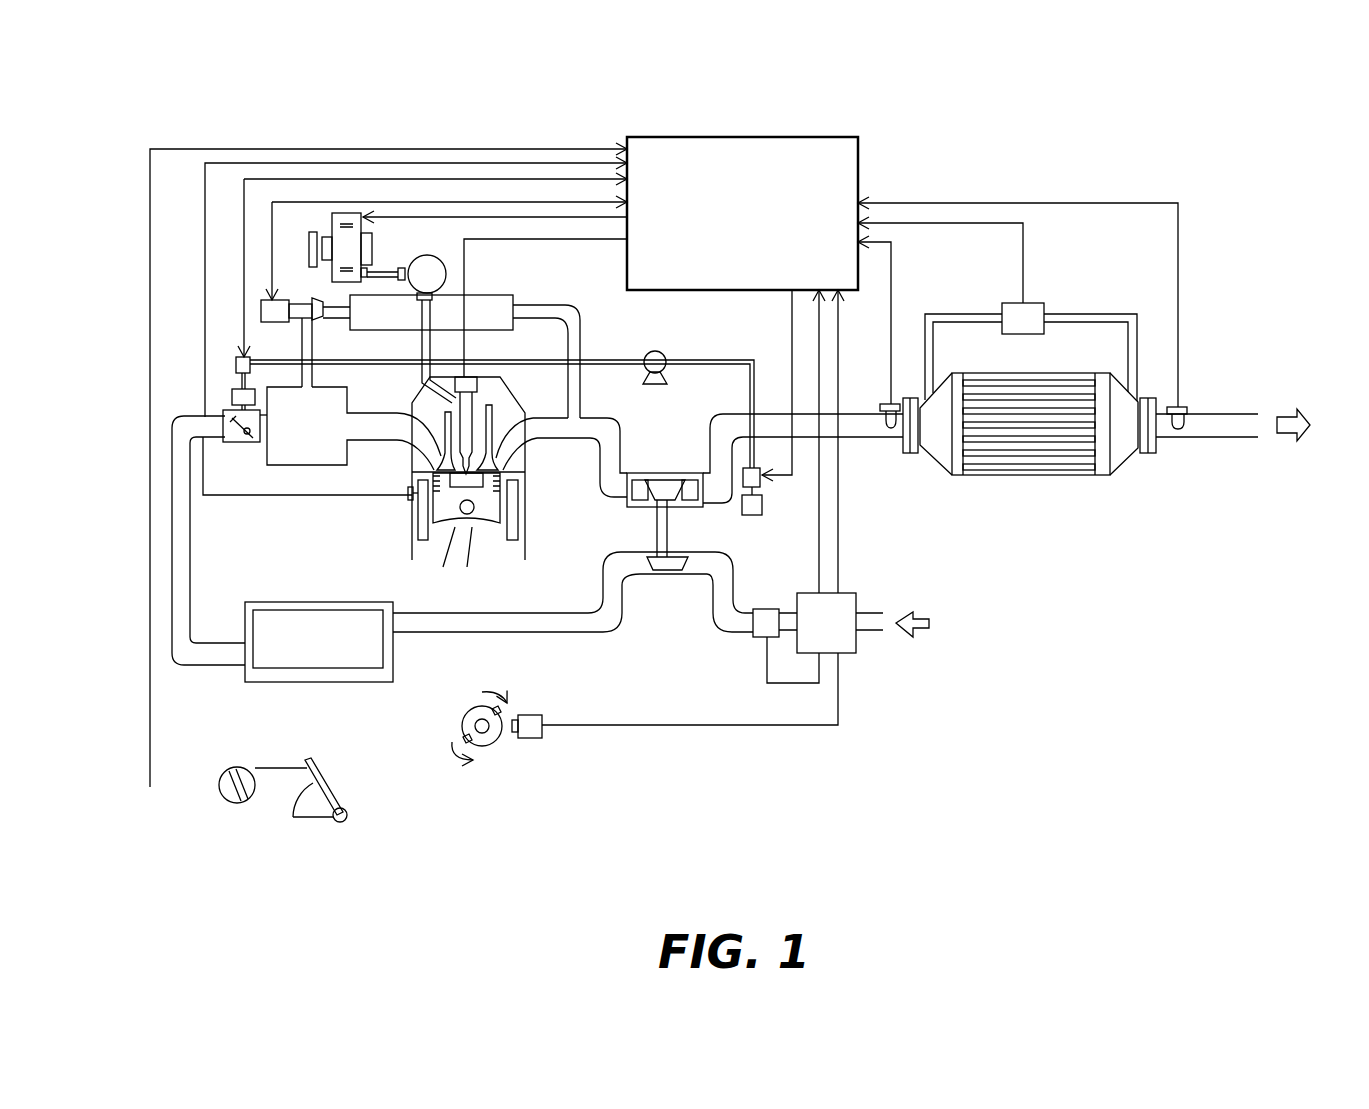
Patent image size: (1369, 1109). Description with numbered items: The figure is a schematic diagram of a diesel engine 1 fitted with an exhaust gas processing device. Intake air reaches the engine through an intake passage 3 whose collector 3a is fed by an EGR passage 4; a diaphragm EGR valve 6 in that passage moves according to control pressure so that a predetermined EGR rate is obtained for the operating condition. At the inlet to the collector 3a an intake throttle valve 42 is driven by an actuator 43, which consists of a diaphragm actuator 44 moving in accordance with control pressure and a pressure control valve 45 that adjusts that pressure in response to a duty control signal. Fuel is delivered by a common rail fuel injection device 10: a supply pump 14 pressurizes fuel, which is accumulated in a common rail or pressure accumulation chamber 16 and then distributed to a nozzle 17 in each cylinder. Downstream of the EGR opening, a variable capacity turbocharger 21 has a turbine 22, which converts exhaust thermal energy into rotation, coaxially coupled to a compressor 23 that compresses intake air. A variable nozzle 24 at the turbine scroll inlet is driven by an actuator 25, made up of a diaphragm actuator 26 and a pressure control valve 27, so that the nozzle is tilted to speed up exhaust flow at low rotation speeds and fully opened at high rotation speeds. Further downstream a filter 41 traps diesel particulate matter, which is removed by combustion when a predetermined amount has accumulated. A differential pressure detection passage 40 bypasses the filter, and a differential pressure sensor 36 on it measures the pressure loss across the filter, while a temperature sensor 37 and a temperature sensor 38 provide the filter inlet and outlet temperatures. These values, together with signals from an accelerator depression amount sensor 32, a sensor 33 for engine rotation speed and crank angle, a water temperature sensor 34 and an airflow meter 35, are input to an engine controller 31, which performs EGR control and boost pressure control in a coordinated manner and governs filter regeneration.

The diesel engine 1 is at (535, 554).
The intake passage 3 is at (377, 425).
The collector 3a is at (332, 398).
The EGR passage 4 is at (584, 335).
The diaphragm EGR valve 6 is at (310, 314).
The common rail fuel injection device 10 is at (394, 251).
The supply pump 14 is at (345, 215).
The common rail (pressure accumulation chamber) 16 is at (428, 270).
The nozzle 17 is at (480, 385).
The variable capacity turbocharger 21 is at (682, 589).
The turbine 22 is at (630, 443).
The compressor 23 is at (662, 570).
The variable nozzle 24 is at (633, 492).
The actuator 25 is at (754, 501).
The diaphragm actuator 26 is at (745, 514).
The pressure control valve 27 is at (758, 474).
The engine controller 31 is at (805, 147).
The accelerator depression amount sensor 32 is at (227, 793).
The engine rotation speed and crank angle sensor 33 is at (530, 740).
The water temperature sensor 34 is at (407, 497).
The airflow meter 35 is at (757, 637).
The differential pressure sensor 36 is at (1043, 302).
The temperature sensor 37 is at (884, 408).
The temperature sensor 38 is at (1187, 407).
The differential pressure detection passage 40 is at (1087, 312).
The filter 41 is at (1062, 460).
The intake throttle valve 42 is at (228, 420).
The actuator 43 is at (221, 382).
The diaphragm actuator 44 is at (232, 398).
The pressure control valve 45 is at (236, 357).